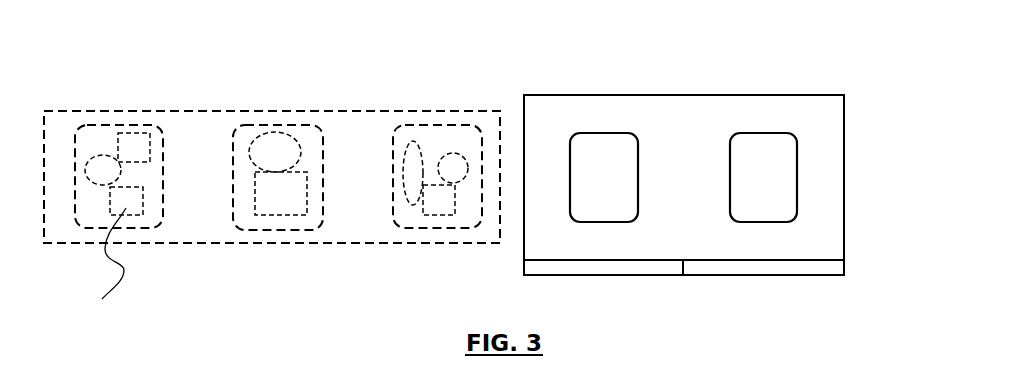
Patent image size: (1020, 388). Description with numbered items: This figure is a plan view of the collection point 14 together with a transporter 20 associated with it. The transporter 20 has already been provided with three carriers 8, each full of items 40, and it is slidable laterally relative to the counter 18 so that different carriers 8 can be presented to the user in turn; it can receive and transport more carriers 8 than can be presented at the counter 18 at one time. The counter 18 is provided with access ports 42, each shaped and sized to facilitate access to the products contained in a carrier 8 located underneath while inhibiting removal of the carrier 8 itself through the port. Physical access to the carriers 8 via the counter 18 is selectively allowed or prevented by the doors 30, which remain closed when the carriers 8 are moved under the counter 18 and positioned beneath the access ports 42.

The carrier 8 is at (120, 120).
The collection point 14 is at (811, 54).
The counter 18 is at (575, 110).
The transporter 20 is at (233, 264).
The door 30 is at (523, 272).
The item 40 is at (98, 262).
The access port 42 is at (782, 177).